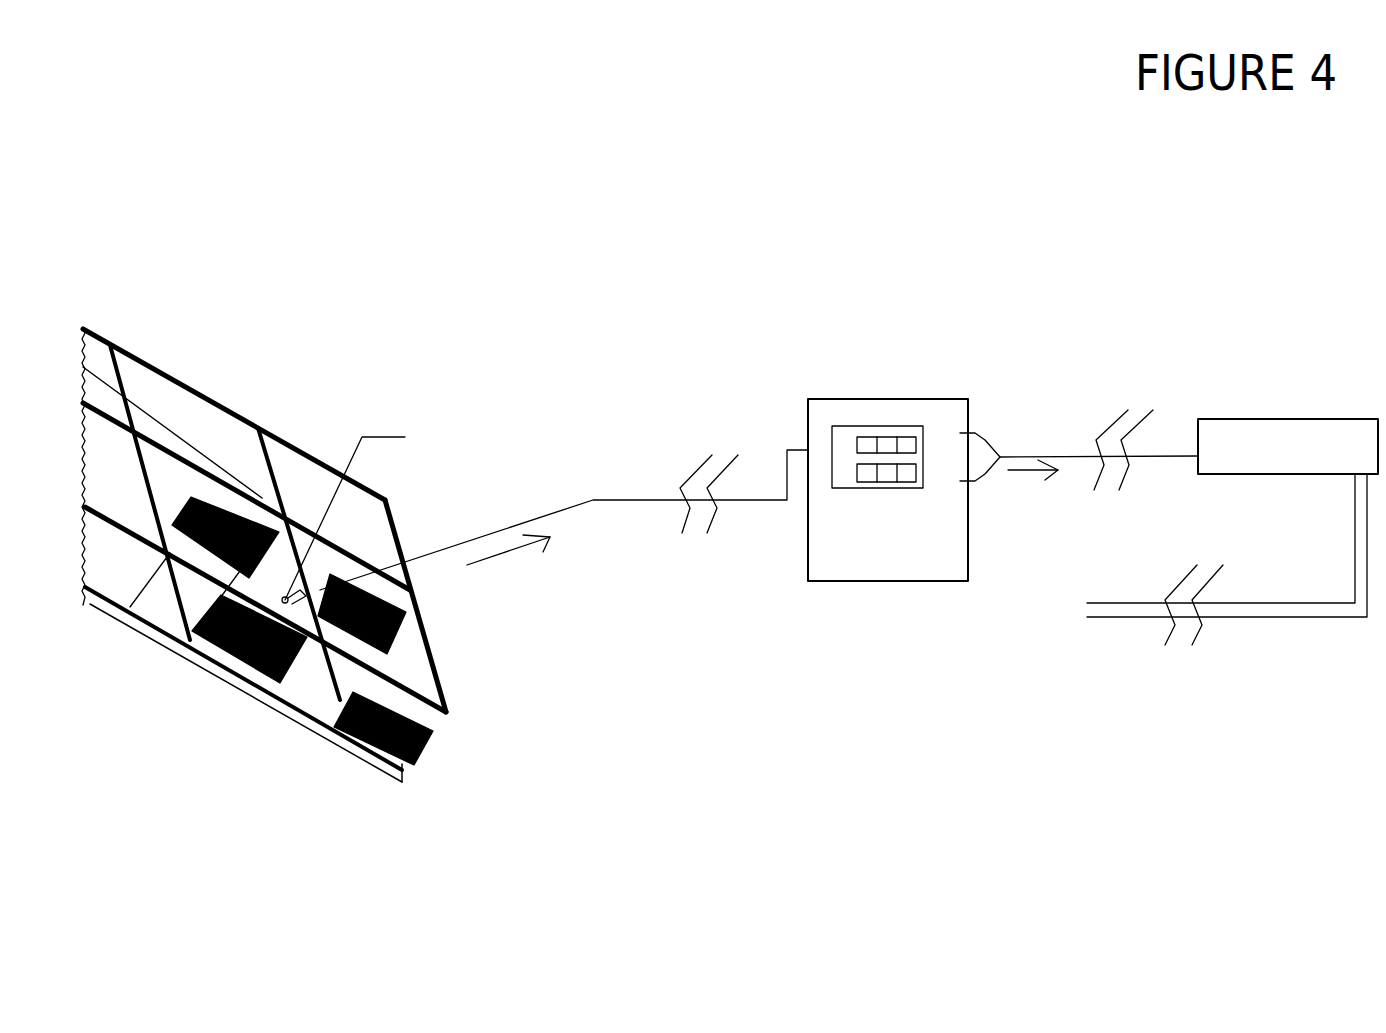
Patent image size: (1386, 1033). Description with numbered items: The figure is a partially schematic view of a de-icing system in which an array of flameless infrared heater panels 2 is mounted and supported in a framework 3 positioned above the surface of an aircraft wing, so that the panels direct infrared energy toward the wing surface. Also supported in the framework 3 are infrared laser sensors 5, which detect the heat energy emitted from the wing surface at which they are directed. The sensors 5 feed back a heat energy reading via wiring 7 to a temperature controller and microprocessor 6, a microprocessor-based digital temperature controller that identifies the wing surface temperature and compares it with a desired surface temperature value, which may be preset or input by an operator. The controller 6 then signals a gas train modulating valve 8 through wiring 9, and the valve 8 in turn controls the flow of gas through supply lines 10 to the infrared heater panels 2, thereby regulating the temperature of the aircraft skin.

The infrared heater panels 2 is at (432, 743).
The framework 3 is at (447, 687).
The infrared laser sensors 5 is at (300, 605).
The temperature controller and microprocessor 6 is at (908, 581).
The wiring 7 is at (597, 498).
The gas train modulating valve 8 is at (1277, 418).
The wiring 9 is at (1155, 452).
The supply lines 10 is at (1316, 618).